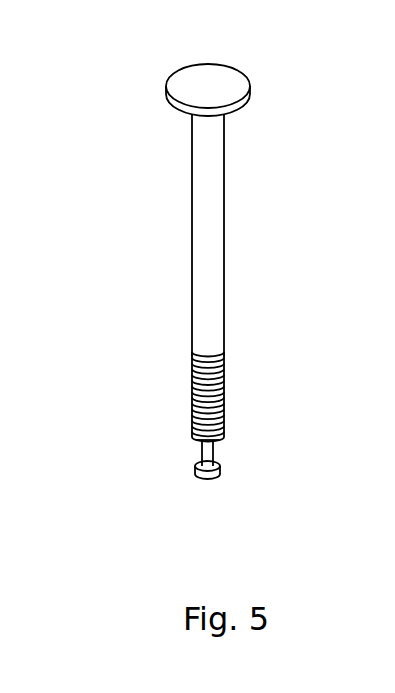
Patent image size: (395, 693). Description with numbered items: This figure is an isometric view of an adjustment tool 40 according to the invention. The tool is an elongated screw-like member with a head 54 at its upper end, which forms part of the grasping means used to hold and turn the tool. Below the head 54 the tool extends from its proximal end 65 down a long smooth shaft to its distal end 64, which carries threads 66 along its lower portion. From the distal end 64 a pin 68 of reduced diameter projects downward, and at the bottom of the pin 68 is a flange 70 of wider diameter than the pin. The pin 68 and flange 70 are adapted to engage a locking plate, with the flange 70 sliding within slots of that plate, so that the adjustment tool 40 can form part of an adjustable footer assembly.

The adjustment tool 40 is at (96, 147).
The head 54 is at (237, 68).
The proximal end 65 is at (225, 122).
The threads 66 is at (225, 383).
The distal end 64 is at (220, 437).
The pin 68 is at (200, 452).
The flange 70 is at (201, 477).